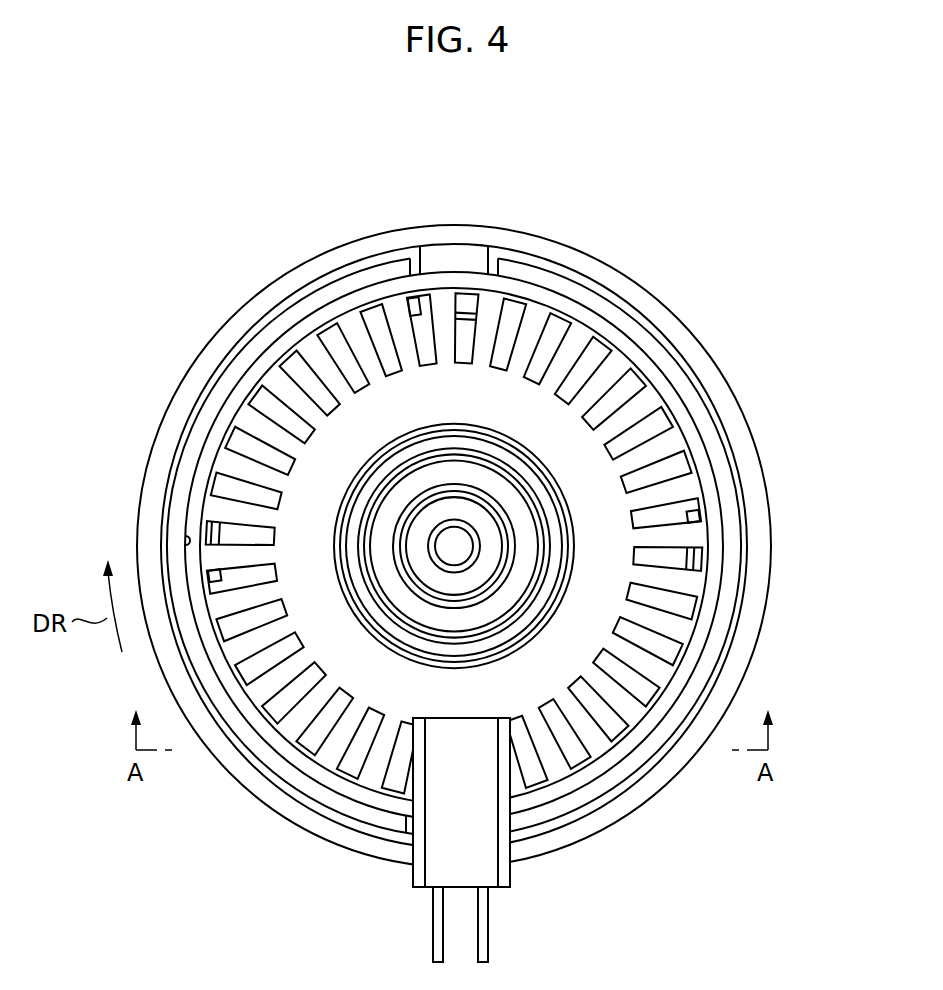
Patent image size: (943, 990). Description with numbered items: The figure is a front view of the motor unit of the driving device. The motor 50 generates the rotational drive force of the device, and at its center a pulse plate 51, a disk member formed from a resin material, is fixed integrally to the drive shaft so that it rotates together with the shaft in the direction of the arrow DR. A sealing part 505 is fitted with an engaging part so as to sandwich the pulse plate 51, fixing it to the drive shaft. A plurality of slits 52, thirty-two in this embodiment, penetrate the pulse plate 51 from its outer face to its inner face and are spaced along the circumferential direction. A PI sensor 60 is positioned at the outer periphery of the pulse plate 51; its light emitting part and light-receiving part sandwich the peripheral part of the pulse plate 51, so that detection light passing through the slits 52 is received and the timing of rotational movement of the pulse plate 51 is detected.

The motor 50 is at (605, 259).
The pulse plate 51 is at (647, 374).
The slit 52 is at (332, 338).
The sealing part 505 is at (522, 556).
The PI sensor 60 is at (436, 853).